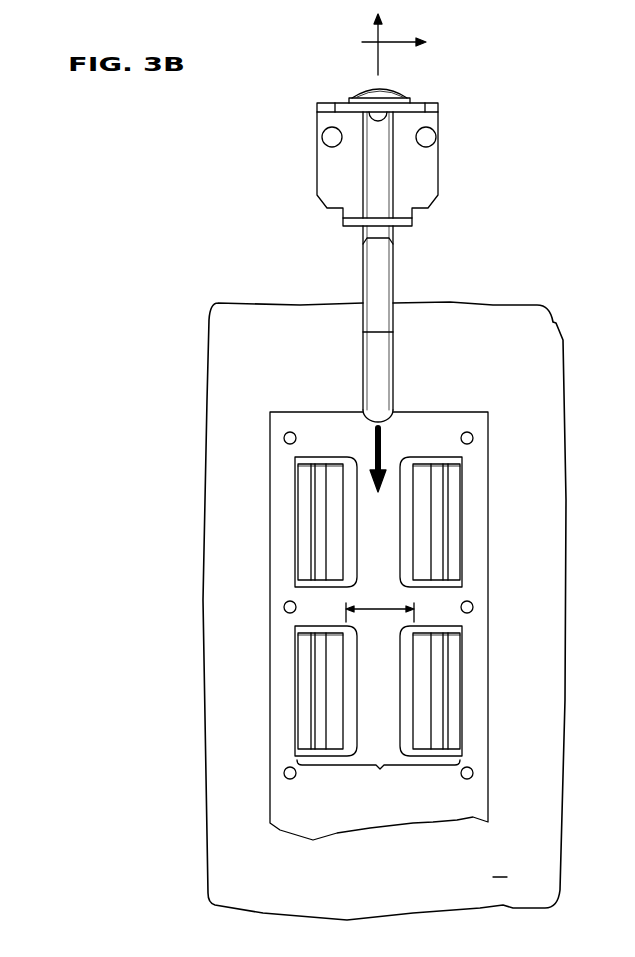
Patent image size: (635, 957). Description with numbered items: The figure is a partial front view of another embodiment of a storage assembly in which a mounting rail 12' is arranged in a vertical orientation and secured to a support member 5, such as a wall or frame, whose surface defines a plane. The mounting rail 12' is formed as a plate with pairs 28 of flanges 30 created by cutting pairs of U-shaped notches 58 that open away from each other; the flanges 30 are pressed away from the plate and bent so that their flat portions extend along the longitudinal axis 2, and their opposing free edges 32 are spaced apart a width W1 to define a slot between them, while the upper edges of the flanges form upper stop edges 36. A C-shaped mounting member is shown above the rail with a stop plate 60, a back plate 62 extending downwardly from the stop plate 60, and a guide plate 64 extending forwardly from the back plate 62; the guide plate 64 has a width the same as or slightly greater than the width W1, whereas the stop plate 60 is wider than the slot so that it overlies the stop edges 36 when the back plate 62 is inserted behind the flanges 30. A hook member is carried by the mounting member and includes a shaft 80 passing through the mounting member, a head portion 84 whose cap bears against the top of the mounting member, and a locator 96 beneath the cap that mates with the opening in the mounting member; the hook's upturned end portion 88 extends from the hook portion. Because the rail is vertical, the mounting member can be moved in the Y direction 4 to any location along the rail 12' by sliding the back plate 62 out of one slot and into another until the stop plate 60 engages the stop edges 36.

The Y direction 4 is at (428, 41).
The head portion 84 is at (368, 89).
The stop plate 60 is at (422, 100).
The back plate 62 is at (421, 168).
The shaft 80 is at (372, 168).
The locator 96 is at (367, 112).
The guide plate 64 is at (408, 226).
The end portion 88 is at (385, 355).
The longitudinal axis 2 is at (383, 432).
The mounting rail 12' is at (407, 611).
The support member 5 is at (500, 866).
The pairs of flanges 28 is at (288, 483).
The U-shaped notches 58 is at (360, 536).
The flanges 30 is at (337, 513).
The upper stop edges 36 is at (330, 463).
The free edges 32 is at (347, 720).
The width of the slot W1 is at (385, 607).